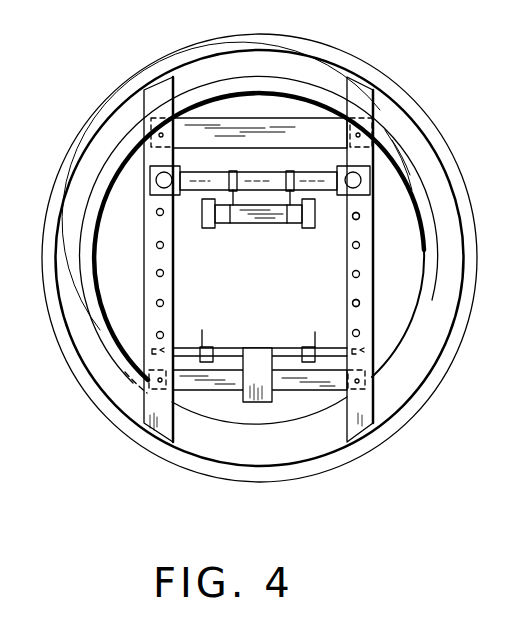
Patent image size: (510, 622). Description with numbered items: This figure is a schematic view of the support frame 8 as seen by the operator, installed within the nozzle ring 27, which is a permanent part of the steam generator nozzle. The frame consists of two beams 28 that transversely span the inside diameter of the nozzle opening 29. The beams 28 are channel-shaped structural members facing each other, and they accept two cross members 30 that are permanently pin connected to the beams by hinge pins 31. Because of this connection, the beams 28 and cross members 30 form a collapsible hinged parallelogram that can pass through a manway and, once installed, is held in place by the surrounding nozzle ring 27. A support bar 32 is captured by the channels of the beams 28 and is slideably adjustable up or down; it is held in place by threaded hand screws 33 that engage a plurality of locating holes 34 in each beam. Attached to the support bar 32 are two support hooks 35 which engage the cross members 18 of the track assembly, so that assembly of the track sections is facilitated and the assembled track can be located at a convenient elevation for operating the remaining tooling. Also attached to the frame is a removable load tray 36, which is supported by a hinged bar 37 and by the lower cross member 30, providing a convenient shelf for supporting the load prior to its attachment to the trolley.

The support frame 8 is at (331, 80).
The cross members 18 is at (258, 224).
The nozzle ring 27 is at (72, 148).
The beams 28 is at (182, 78).
The nozzle opening 29 is at (97, 238).
The cross members 30 is at (223, 118).
The hinge pins 31 is at (359, 134).
The support bar 32 is at (281, 169).
The threaded hand screws 33 is at (362, 181).
The locating holes 34 is at (359, 218).
The support hooks 35 is at (230, 228).
The load tray 36 is at (315, 341).
The hinged bar 37 is at (182, 350).